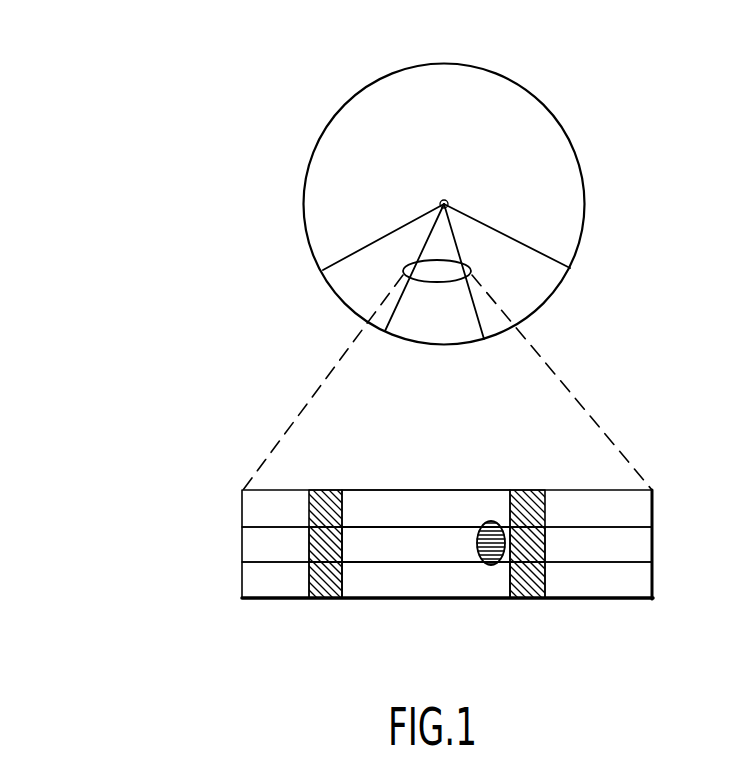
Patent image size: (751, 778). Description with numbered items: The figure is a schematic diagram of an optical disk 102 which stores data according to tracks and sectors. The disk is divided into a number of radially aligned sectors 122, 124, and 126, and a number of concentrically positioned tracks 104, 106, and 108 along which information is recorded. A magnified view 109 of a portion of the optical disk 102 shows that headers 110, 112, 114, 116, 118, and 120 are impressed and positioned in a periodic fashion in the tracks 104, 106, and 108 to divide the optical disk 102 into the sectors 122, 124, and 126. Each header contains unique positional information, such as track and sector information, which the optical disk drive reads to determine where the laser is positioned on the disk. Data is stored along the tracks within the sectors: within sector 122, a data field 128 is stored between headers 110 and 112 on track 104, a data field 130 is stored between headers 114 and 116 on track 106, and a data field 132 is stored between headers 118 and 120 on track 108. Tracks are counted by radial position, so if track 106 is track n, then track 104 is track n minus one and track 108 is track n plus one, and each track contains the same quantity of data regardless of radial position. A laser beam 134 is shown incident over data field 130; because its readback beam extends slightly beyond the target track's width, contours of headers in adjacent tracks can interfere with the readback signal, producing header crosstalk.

The optical disk 102 is at (573, 147).
The track 104 is at (653, 510).
The track 106 is at (653, 550).
The track 108 is at (655, 592).
The magnified view 109 is at (440, 282).
The header 110 is at (320, 495).
The header 112 is at (522, 495).
The header 114 is at (305, 545).
The header 116 is at (530, 545).
The header 118 is at (328, 580).
The header 120 is at (525, 587).
The sector 122 is at (470, 333).
The sector 124 is at (548, 278).
The sector 126 is at (347, 288).
The data field 128 is at (453, 500).
The data field 130 is at (355, 540).
The data field 132 is at (360, 575).
The laser beam 134 is at (490, 567).